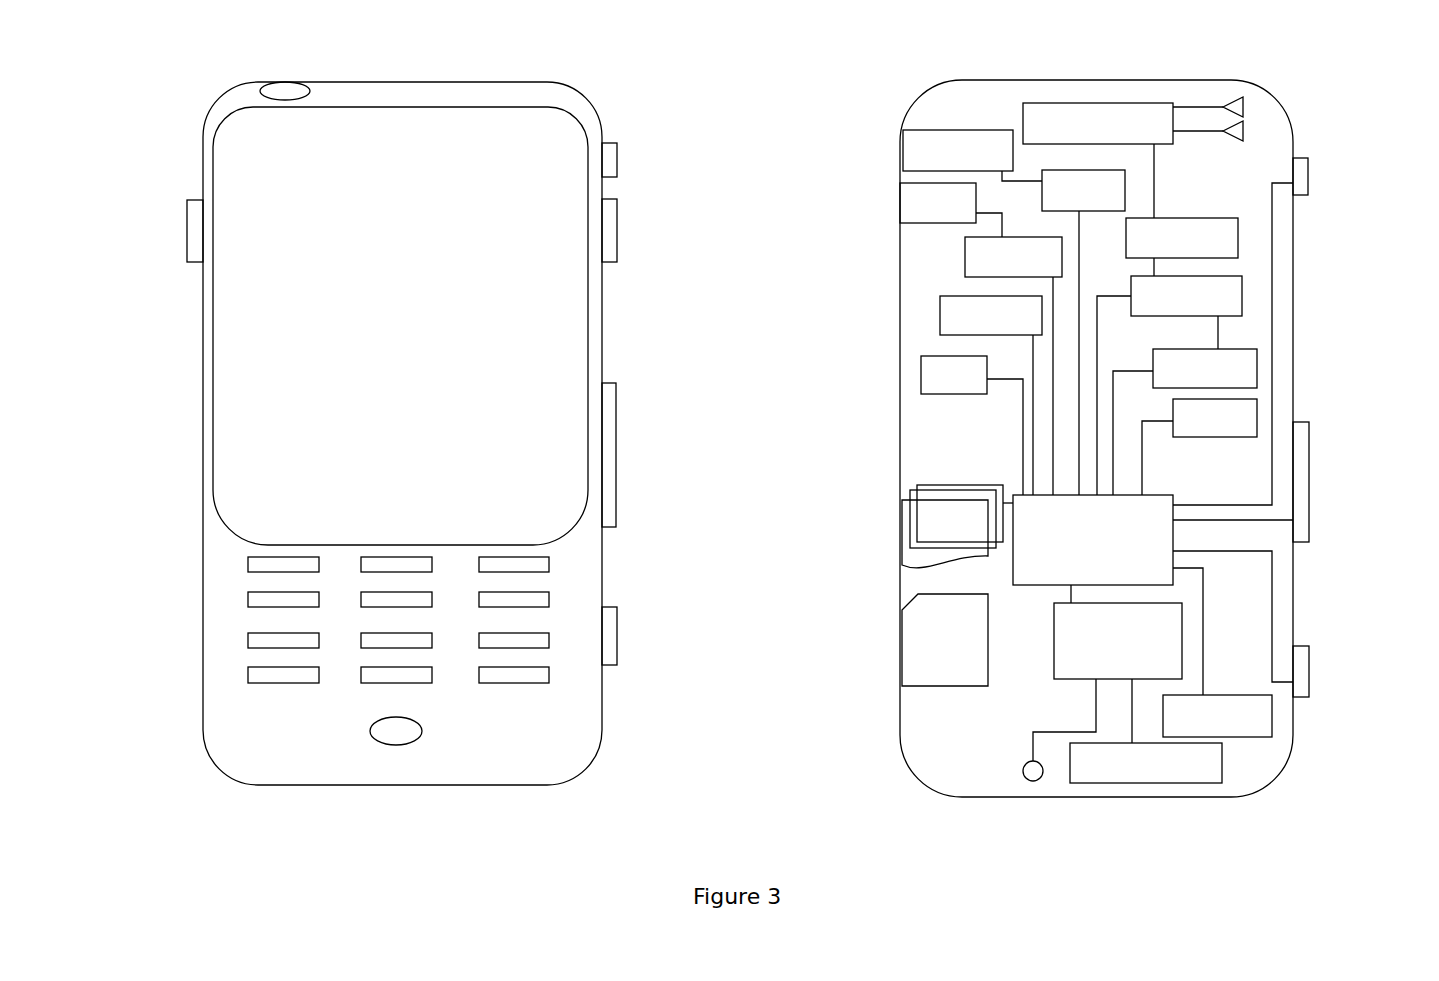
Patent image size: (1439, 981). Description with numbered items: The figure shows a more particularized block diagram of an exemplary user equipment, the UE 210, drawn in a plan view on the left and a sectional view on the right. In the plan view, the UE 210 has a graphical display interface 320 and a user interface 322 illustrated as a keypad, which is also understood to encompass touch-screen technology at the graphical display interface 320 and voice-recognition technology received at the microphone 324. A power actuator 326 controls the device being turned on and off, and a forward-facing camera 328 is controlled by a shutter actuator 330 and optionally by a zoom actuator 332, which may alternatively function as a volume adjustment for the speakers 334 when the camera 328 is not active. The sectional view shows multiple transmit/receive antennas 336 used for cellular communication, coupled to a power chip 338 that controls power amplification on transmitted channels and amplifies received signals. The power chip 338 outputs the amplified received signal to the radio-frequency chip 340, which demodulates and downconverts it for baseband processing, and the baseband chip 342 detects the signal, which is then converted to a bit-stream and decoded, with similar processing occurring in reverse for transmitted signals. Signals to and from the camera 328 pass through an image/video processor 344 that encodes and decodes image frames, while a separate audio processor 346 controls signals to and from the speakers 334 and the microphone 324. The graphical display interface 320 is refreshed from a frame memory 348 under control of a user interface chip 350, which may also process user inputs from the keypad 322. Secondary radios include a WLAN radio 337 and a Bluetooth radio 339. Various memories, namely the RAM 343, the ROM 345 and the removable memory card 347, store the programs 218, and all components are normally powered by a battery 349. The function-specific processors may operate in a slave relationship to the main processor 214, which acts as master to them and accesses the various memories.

The user equipment 210 is at (183, 121).
The main processor 214 is at (1020, 495).
The programs 218 is at (915, 543).
The graphical display interface 320 is at (283, 303).
The user interface 322 is at (208, 601).
The microphone 324 is at (393, 738).
The power actuator 326 is at (617, 158).
The camera 328 is at (283, 80).
The shutter actuator 330 is at (615, 630).
The zoom actuator 332 is at (617, 408).
The speaker 334 is at (187, 192).
The transmit/receive antennas 336 is at (1243, 100).
The WLAN radio 337 is at (940, 314).
The power chip 338 is at (1068, 103).
The Bluetooth radio 339 is at (921, 379).
The radio-frequency chip 340 is at (1238, 225).
The baseband chip 342 is at (1242, 287).
The random access memory 343 is at (1257, 360).
The image/video processor 344 is at (1125, 211).
The read only memory 345 is at (1257, 410).
The audio processor 346 is at (965, 259).
The memory card 347 is at (925, 620).
The frame memory 348 is at (1140, 783).
The battery 349 is at (1255, 737).
The user interface chip 350 is at (1054, 640).